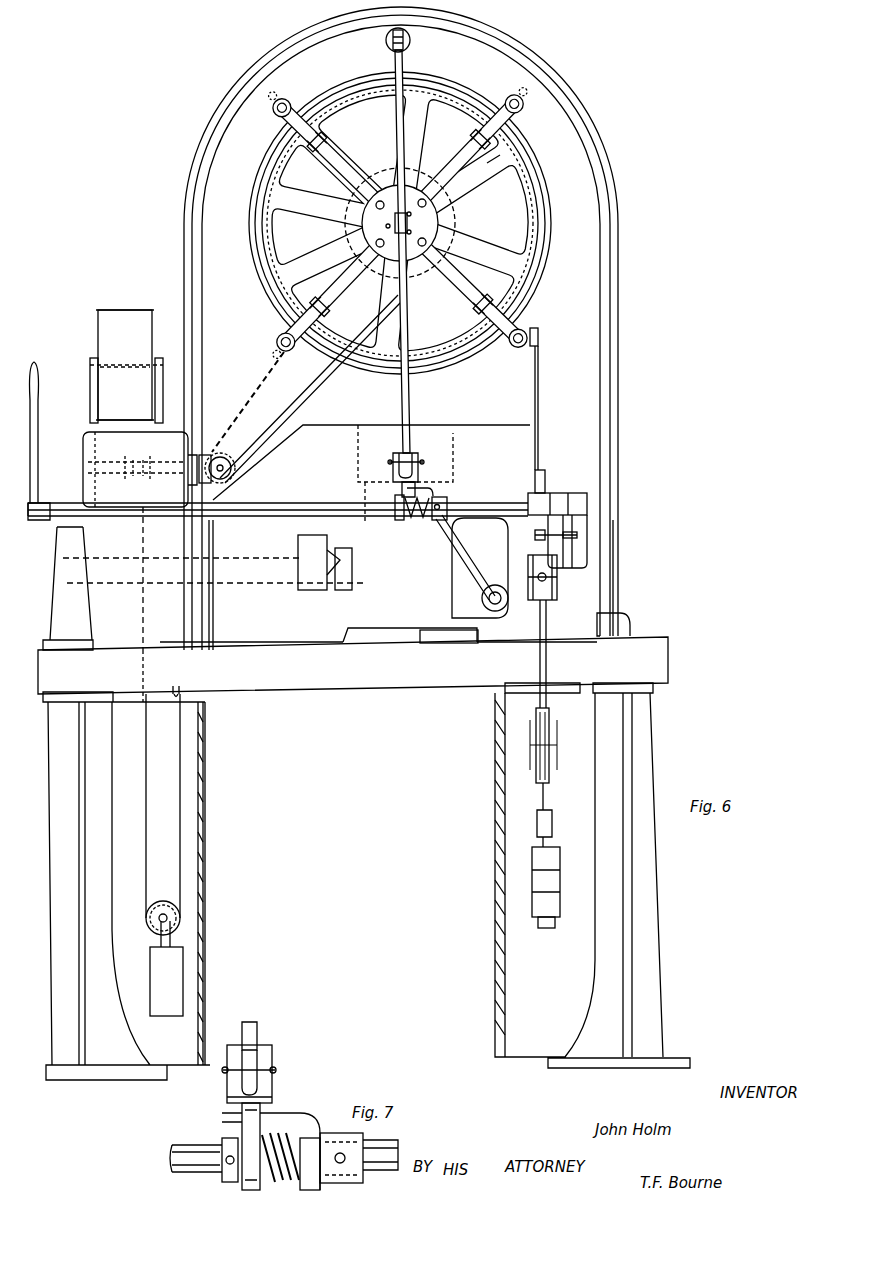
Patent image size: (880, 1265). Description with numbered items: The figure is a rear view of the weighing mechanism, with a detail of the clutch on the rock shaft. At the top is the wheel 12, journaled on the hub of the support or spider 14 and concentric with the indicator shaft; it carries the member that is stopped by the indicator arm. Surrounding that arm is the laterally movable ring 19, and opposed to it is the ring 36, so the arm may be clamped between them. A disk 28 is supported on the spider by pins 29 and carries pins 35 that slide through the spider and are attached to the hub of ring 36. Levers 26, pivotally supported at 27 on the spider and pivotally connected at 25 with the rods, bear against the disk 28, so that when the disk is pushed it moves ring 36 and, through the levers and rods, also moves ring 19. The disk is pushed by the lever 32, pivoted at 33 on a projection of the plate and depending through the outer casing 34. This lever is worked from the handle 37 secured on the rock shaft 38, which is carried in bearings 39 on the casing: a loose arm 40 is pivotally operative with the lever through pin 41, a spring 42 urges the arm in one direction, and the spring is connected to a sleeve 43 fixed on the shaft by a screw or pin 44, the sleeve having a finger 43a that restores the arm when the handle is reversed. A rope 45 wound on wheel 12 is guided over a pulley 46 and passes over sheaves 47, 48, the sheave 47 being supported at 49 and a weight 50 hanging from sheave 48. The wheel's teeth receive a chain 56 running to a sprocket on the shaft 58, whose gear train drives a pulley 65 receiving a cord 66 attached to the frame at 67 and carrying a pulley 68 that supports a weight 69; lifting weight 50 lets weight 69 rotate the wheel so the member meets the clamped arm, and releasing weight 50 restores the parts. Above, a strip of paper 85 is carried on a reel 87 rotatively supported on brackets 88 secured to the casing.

In FIG. 6, the wheel 12 is at (448, 214).
In FIG. 6, the support or spider 14 is at (492, 168).
In FIG. 6, the laterally movable ring 19 is at (536, 176).
In FIG. 6, the ring 36 is at (536, 213).
In FIG. 6, the pivotal connection 25 is at (290, 104).
In FIG. 6, the levers 26 is at (345, 162).
In FIG. 6, the pivot of levers 27 is at (494, 292).
In FIG. 6, the laterally movable plate or disk 28 is at (444, 224).
In FIG. 6, the pins 29 is at (372, 227).
In FIG. 6, the pins 35 is at (394, 223).
In FIG. 6, the lever 32 is at (388, 61).
In FIG. 7, the lever 32 is at (262, 1023).
In FIG. 6, the pivot of lever 33 is at (408, 38).
In FIG. 6, the outer casing 34 is at (621, 372).
In FIG. 6, the handle 37 is at (40, 482).
In FIG. 6, the rock shaft 38 is at (280, 503).
In FIG. 7, the rock shaft 38 is at (192, 1145).
In FIG. 6, the bearing standard 39 is at (590, 503).
In FIG. 6, the loose arm 40 is at (390, 470).
In FIG. 7, the loose arm 40 is at (274, 1095).
In FIG. 6, the pin 41 is at (420, 462).
In FIG. 7, the pin 41 is at (278, 1074).
In FIG. 6, the spring 42 is at (408, 522).
In FIG. 7, the spring 42 is at (267, 1190).
In FIG. 6, the sleeve 43 is at (452, 498).
In FIG. 7, the sleeve 43 is at (315, 1190).
In FIG. 6, the finger 43a is at (440, 482).
In FIG. 7, the finger 43a is at (290, 1118).
In FIG. 7, the screw or pin 44 is at (343, 1163).
In FIG. 6, the rope or flexible member 45 is at (540, 410).
In FIG. 6, the pulley 46 is at (540, 332).
In FIG. 6, the sheave 47 is at (556, 600).
In FIG. 6, the sheave 48 is at (556, 742).
In FIG. 6, the support of sheave 49 is at (580, 536).
In FIG. 6, the weight 50 is at (562, 856).
In FIG. 6, the chain 56 is at (258, 381).
In FIG. 6, the shaft 58 is at (228, 458).
In FIG. 6, the pulley 65 is at (140, 469).
In FIG. 6, the cord or rope 66 is at (213, 578).
In FIG. 6, the attachment point on main frame 67 is at (182, 692).
In FIG. 6, the pulley 68 is at (181, 920).
In FIG. 6, the weight 69 is at (166, 981).
In FIG. 6, the strip of paper 85 is at (122, 322).
In FIG. 6, the reel 87 is at (89, 333).
In FIG. 6, the brackets 88 is at (88, 378).